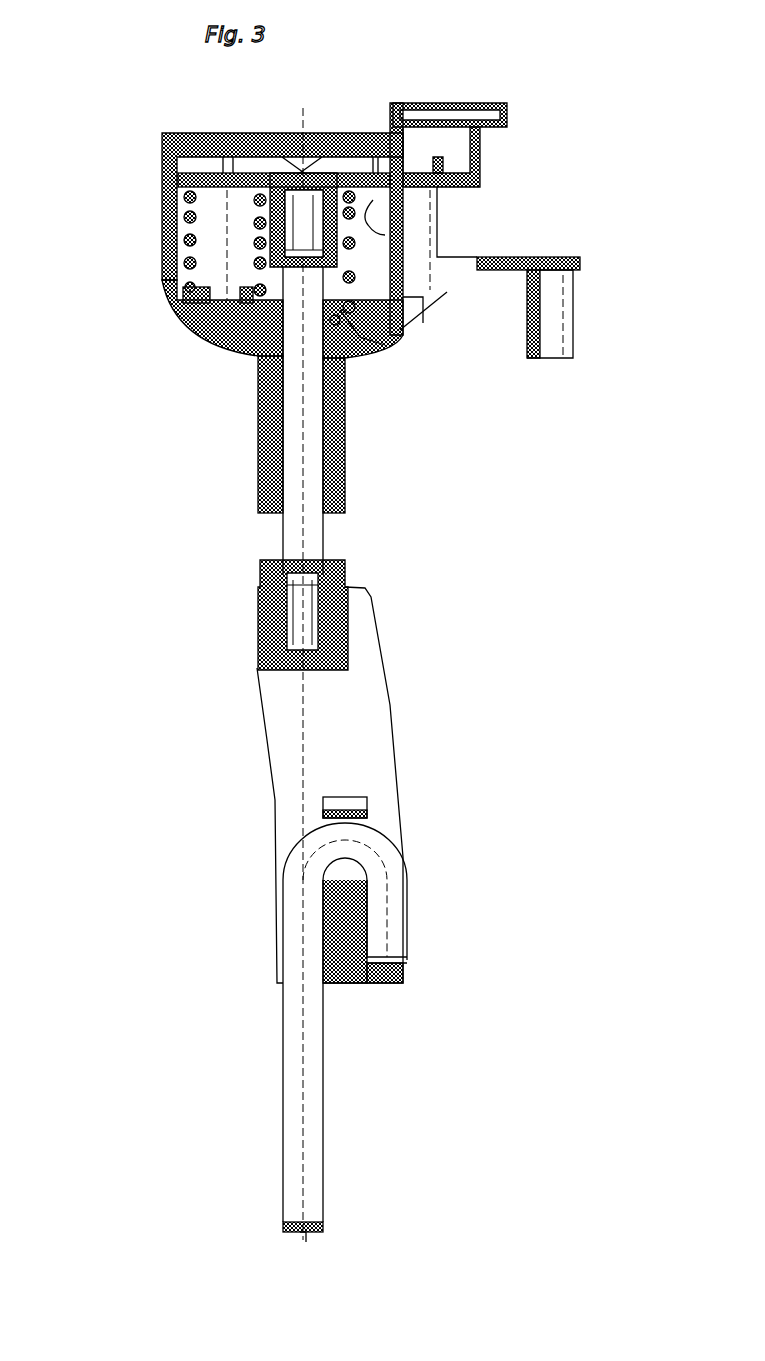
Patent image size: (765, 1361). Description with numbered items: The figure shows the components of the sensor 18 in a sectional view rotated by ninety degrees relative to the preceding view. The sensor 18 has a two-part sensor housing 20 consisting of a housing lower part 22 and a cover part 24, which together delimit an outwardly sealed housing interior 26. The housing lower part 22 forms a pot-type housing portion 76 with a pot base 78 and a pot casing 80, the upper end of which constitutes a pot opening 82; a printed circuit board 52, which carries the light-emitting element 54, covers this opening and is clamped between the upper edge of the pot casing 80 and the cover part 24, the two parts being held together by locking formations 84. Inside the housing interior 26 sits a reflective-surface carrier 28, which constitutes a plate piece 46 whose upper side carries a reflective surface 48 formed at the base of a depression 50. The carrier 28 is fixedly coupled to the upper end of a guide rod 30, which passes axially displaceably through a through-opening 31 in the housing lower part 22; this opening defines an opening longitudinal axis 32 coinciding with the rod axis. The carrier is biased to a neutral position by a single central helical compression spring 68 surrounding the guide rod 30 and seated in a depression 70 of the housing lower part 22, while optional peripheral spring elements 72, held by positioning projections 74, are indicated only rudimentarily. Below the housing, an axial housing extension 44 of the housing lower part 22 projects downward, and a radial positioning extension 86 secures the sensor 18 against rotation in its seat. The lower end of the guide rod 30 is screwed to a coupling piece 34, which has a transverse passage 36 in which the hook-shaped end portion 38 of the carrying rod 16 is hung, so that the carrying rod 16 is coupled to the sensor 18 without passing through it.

The carrying rod 16 is at (325, 1105).
The sensor 18 is at (490, 405).
The sensor housing 20 is at (423, 322).
The housing lower part 22 is at (203, 343).
The cover part 24 is at (163, 137).
The housing interior 26 is at (210, 252).
The reflective-surface carrier 28 is at (385, 250).
The guide rod 30 is at (325, 535).
The through-opening 31 is at (295, 473).
The opening longitudinal axis 32 is at (345, 610).
The coupling piece 34 is at (258, 622).
The transverse passage 36 is at (350, 740).
The end portion 38 is at (393, 866).
The axial housing extension 44 is at (260, 448).
The plate piece 46 is at (185, 133).
The reflective surface 48 is at (280, 150).
The depression 50 is at (363, 133).
The printed circuit board 52 is at (440, 140).
The light-emitting element 54 is at (322, 157).
The helical compression spring 68 is at (340, 273).
The depression 70 is at (255, 358).
The spring elements 72 is at (163, 215).
The positioning projections 74 is at (200, 313).
The pot-type housing portion 76 is at (460, 270).
The pot base 78 is at (372, 355).
The pot casing 80 is at (372, 232).
The pot opening 82 is at (227, 133).
The locking formations 84 is at (162, 232).
The radial positioning extension 86 is at (575, 262).